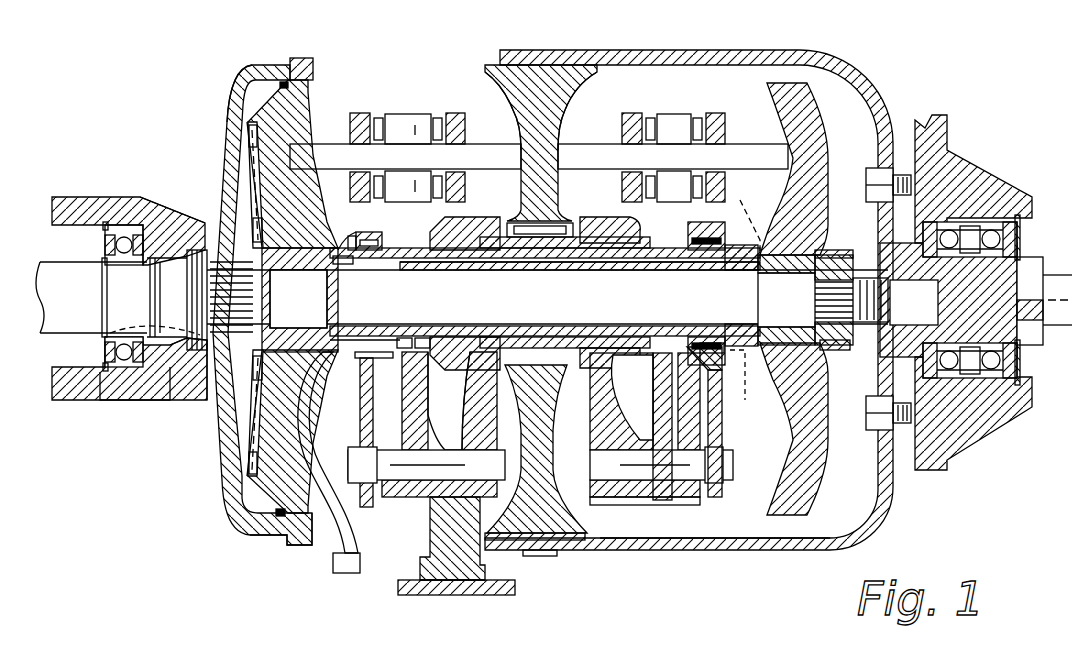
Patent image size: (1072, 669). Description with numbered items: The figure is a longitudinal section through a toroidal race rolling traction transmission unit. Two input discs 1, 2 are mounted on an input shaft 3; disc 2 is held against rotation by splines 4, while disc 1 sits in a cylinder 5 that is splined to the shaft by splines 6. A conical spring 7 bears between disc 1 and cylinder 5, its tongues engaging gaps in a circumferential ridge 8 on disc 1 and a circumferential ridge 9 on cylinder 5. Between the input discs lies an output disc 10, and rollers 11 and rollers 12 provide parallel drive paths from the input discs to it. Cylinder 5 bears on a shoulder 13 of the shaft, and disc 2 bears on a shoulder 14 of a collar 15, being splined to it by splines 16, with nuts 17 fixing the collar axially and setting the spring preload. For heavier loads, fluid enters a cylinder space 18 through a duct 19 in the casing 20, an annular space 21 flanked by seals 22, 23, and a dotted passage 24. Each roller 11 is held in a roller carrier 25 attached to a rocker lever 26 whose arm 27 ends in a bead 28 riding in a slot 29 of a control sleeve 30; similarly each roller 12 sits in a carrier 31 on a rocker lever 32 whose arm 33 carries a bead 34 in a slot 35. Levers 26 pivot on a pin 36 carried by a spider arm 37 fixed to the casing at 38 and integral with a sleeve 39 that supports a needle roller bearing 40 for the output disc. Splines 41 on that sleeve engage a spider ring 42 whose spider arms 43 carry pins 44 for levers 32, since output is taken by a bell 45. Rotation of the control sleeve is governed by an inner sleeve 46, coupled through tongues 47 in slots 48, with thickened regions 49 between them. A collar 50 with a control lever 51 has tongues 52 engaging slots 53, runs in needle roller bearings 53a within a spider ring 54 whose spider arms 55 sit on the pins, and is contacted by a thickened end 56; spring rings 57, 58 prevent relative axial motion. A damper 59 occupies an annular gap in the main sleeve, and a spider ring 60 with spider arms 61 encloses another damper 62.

The input disc 1 is at (295, 78).
The input disc 2 is at (828, 100).
The input shaft 3 is at (538, 307).
The splines 4 is at (827, 267).
The cylinder 5 is at (230, 133).
The splines 6 is at (220, 423).
The conical spring 7 is at (252, 177).
The circumferential ridge 8 is at (240, 123).
The circumferential ridge 9 is at (238, 230).
The output disc 10 is at (578, 72).
The rollers 11 is at (340, 145).
The rollers 12 is at (612, 147).
The shoulder 13 is at (217, 377).
The shoulder 14 is at (820, 272).
The collar 15 is at (760, 333).
The splines 16 is at (787, 253).
The nuts 17 is at (862, 348).
The cylinder space 18 is at (253, 497).
The duct 19 is at (167, 383).
The casing 20 is at (947, 432).
The annular space 21 is at (180, 250).
The seal 22 is at (153, 283).
The seal 23 is at (200, 297).
The passage 24 is at (110, 344).
The roller carrier 25 is at (447, 113).
The rocker lever 26 is at (397, 490).
The arm 27 is at (417, 398).
The bead 28 is at (413, 340).
The slot 29 is at (443, 345).
The control sleeve 30 is at (413, 258).
The carrier 31 is at (717, 116).
The rocker lever 32 is at (697, 490).
The arm 33 is at (670, 413).
The bead 34 is at (664, 332).
The slot 35 is at (637, 350).
The pin 36 is at (420, 467).
The arm 37 is at (477, 427).
The fixing to casing 38 is at (482, 600).
The sleeve 39 is at (513, 212).
The needle roller bearing 40 is at (557, 222).
The splines 41 is at (622, 266).
The spider ring 42 is at (617, 228).
The spider arms 43 is at (606, 420).
The pins 44 is at (650, 467).
The bell 45 is at (727, 550).
The inner sleeve 46 is at (610, 266).
The tongues 47 is at (713, 334).
The slots 48 is at (747, 327).
The thickened regions 49 is at (712, 263).
The collar 50 is at (352, 246).
The control lever 51 is at (255, 462).
The tongues 52 is at (352, 363).
The slots 53 is at (327, 336).
The needle roller bearings 53a is at (360, 248).
The spider ring 54 is at (370, 237).
The spider arms 55 is at (367, 433).
The thickened end 56 is at (357, 266).
The spring ring 57 is at (715, 262).
The spring ring 58 is at (298, 299).
The damper 59 is at (450, 228).
The spider ring 60 is at (712, 220).
The spider arms 61 is at (740, 427).
The damper 62 is at (700, 353).